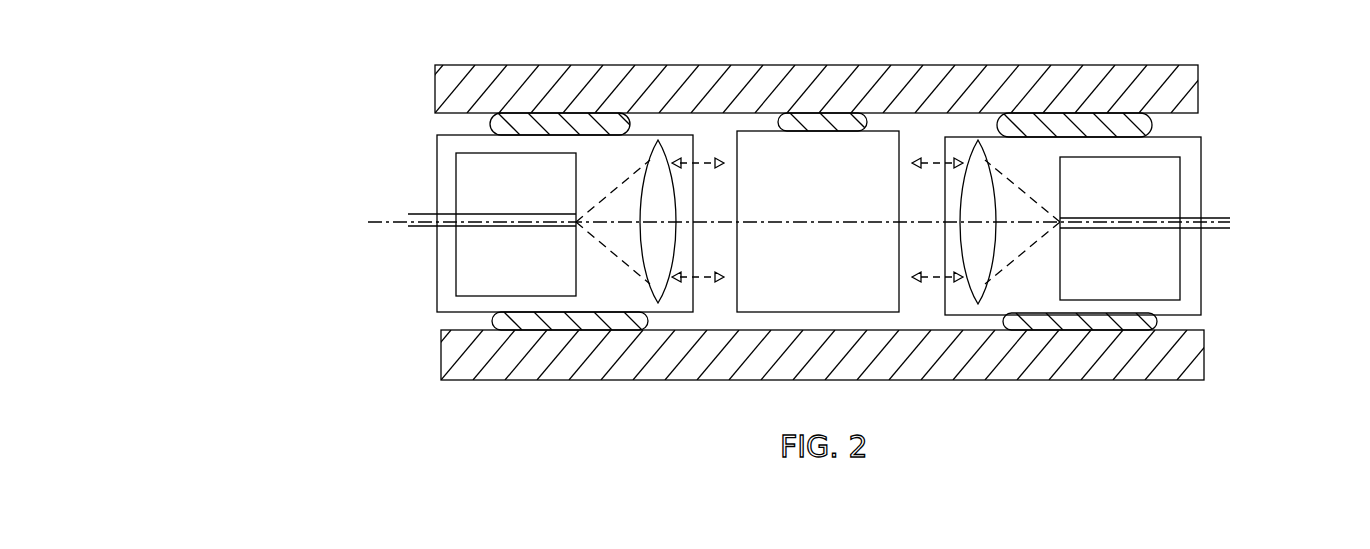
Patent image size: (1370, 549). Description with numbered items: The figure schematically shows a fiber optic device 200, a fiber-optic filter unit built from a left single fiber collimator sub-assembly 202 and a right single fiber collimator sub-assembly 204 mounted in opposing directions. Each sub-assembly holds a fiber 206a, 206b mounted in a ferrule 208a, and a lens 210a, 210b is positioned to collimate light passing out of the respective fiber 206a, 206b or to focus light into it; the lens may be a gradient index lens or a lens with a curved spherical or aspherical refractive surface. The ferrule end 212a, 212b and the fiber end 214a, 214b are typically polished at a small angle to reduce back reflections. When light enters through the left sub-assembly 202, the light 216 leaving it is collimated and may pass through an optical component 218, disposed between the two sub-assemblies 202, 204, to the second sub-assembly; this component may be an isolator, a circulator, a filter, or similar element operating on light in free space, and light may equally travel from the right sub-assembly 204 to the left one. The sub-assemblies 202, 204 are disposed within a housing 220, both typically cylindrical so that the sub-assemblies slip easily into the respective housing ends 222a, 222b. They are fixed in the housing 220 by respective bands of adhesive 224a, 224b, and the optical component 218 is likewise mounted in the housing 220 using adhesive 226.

The fiber optic device 200 is at (290, 62).
The left single fiber collimator sub-assembly 202 is at (437, 148).
The right single fiber collimator sub-assembly 204 is at (1202, 158).
The fiber 206a is at (425, 226).
The fiber 206b is at (1217, 230).
The ferrule 208a is at (455, 195).
The lens 210a is at (658, 305).
The lens 210b is at (978, 306).
The ferrule end 212a is at (578, 278).
The ferrule end 212b is at (1060, 284).
The fiber end 214a is at (579, 227).
The fiber end 214b is at (1058, 228).
The light 216 is at (617, 252).
The optical component 218 is at (880, 313).
The housing 220 is at (1137, 66).
The housing end 222a is at (437, 125).
The housing end 222b is at (1188, 128).
The band of adhesive 224a is at (492, 323).
The band of adhesive 224b is at (1158, 323).
The adhesive 226 is at (783, 125).